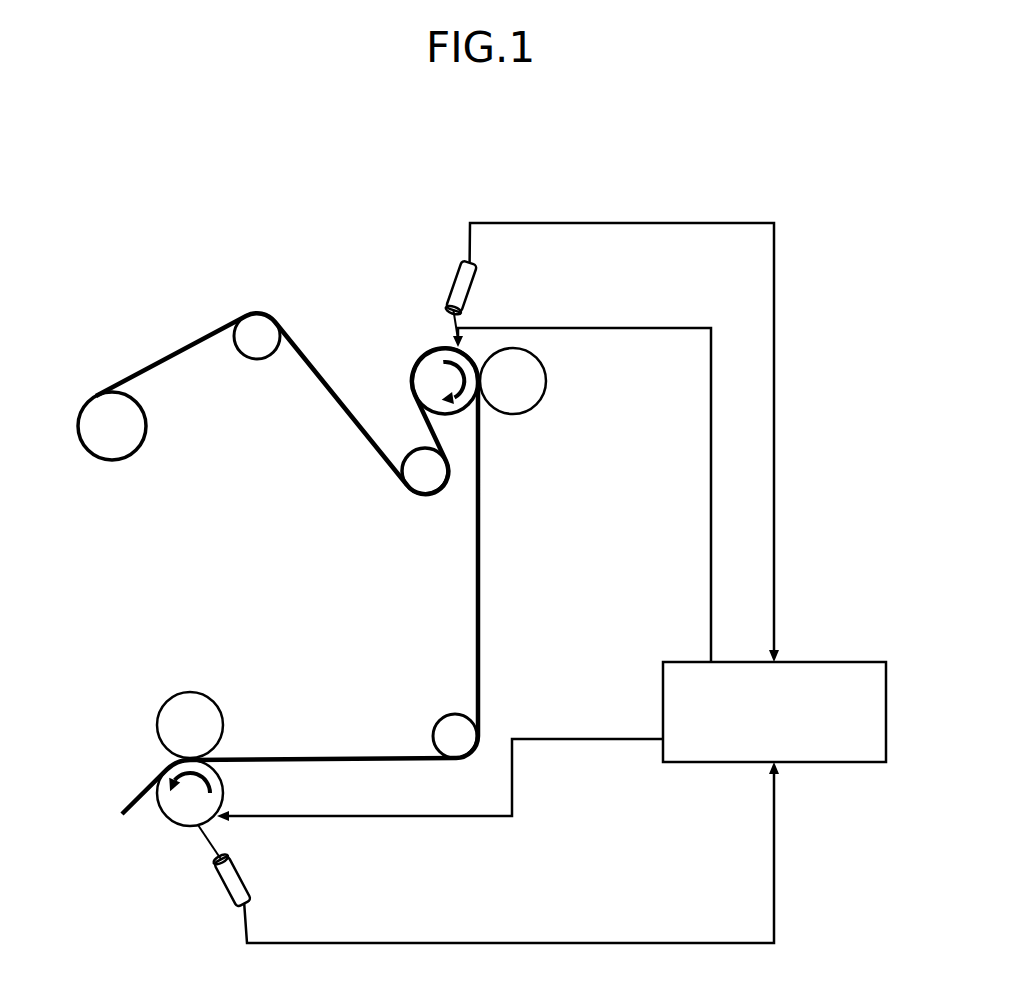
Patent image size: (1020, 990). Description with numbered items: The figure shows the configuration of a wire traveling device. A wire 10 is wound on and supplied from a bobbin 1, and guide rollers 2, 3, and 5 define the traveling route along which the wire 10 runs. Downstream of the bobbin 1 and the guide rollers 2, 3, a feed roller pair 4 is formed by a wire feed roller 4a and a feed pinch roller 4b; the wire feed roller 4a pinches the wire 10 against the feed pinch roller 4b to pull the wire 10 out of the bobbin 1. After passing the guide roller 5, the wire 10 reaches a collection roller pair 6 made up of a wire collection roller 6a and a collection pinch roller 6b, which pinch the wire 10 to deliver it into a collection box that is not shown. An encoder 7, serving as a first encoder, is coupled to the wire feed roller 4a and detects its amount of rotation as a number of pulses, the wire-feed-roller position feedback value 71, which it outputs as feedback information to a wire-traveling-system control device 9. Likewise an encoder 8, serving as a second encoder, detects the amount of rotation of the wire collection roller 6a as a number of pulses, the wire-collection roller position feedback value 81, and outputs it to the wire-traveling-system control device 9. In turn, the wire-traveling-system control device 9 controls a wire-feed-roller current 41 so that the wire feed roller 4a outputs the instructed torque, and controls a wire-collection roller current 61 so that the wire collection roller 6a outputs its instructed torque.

The bobbin 1 is at (112, 461).
The guide roller 2 is at (257, 359).
The guide roller 3 is at (426, 495).
The wire feed roller pair 4 is at (476, 410).
The wire feed roller 4a is at (414, 368).
The feed pinch roller 4b is at (536, 392).
The guide roller 5 is at (442, 716).
The wire collection roller pair 6 is at (188, 746).
The wire collection roller 6a is at (224, 792).
The collection pinch roller 6b is at (224, 727).
The encoder 7 is at (447, 283).
The encoder 8 is at (218, 890).
The wire-traveling-system control device 9 is at (834, 764).
The wire 10 is at (481, 563).
The wire-feed-roller current 41 is at (610, 327).
The wire-collection roller current 61 is at (584, 742).
The wire-feed-roller position feedback (FE) value 71 is at (627, 222).
The wire-collection roller position feedback (FR) value 81 is at (537, 942).